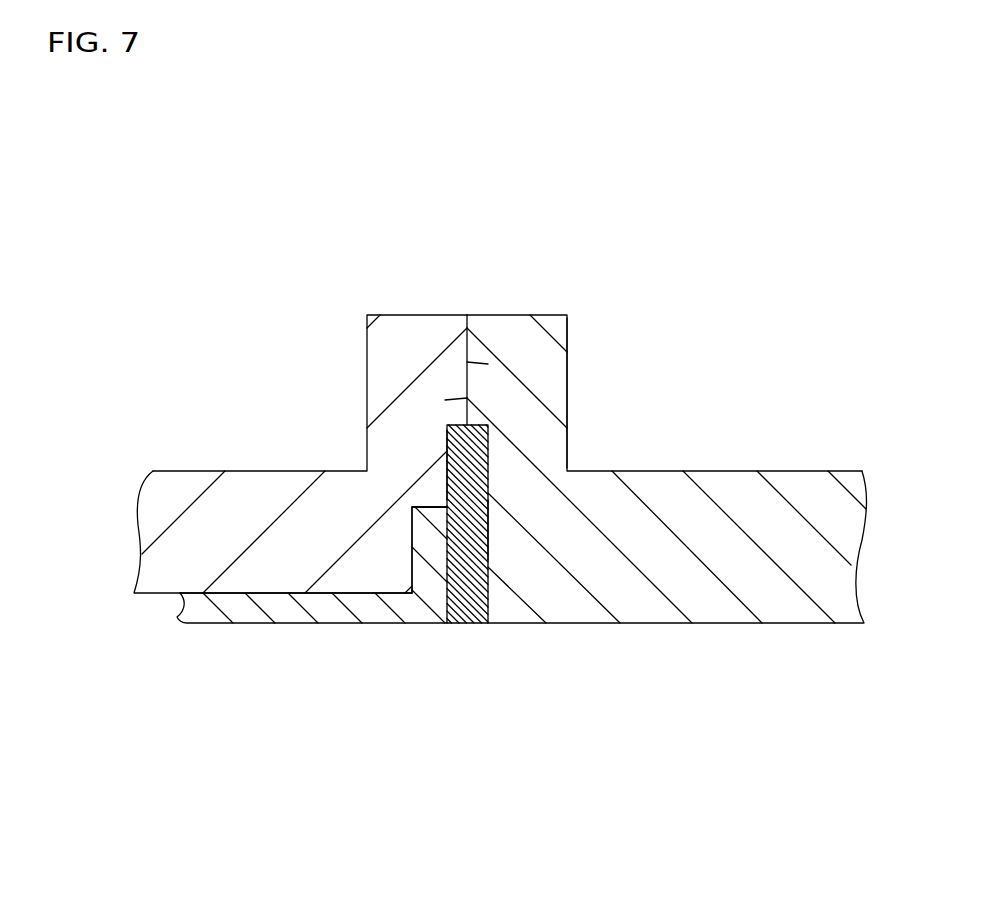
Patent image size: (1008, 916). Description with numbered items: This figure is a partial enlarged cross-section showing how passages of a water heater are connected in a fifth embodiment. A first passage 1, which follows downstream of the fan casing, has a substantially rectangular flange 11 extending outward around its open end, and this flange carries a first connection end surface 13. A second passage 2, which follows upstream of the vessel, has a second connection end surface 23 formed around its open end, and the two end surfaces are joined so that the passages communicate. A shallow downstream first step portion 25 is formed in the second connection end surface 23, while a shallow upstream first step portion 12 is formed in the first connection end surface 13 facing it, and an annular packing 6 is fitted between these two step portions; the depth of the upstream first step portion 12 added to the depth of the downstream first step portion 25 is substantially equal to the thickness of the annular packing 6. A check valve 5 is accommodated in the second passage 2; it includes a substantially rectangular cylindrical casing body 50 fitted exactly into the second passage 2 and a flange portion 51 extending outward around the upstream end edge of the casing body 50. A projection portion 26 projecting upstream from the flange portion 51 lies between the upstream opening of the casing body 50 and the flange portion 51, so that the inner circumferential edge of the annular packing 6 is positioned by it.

The first passage 1 is at (745, 471).
The second passage 2 is at (190, 469).
The flange 11 is at (568, 389).
The first connection end surface 13 is at (467, 398).
The second connection end surface 23 is at (467, 362).
The downstream first step portion 25 is at (449, 487).
The annular packing 6 is at (468, 517).
The upstream first step portion 12 is at (490, 562).
The check valve 5 is at (286, 647).
The casing body 50 is at (286, 647).
The protrusion 26 is at (413, 566).
The flange portion 51 is at (425, 542).